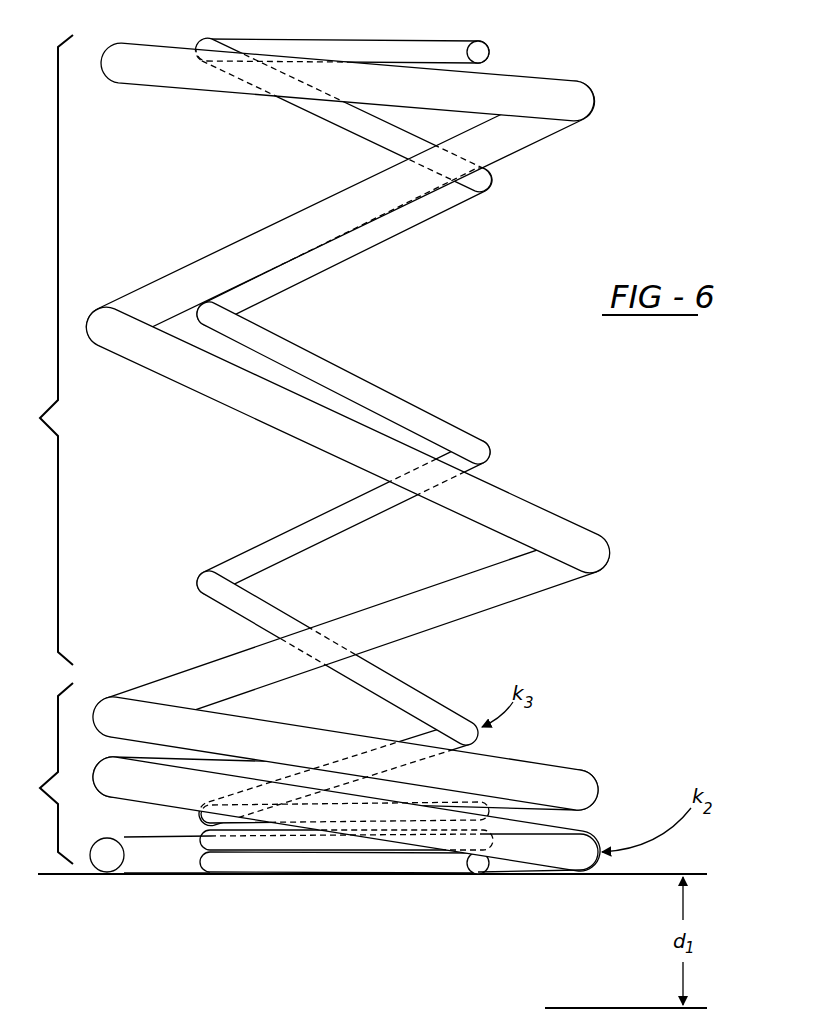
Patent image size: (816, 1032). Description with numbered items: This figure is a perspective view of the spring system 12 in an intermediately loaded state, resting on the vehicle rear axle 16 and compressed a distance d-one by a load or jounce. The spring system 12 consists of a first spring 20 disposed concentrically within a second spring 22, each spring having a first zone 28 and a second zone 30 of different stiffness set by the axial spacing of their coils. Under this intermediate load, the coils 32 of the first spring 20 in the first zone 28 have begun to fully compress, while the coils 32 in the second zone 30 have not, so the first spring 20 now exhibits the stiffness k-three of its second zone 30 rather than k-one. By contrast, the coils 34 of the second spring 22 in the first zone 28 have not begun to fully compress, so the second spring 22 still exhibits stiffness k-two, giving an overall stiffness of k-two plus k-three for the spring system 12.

The spring system 12 is at (390, 439).
The vehicle rear axle 16 is at (241, 934).
The first spring 20 is at (392, 456).
The second spring 22 is at (382, 458).
The first zone 28 is at (45, 773).
The second zone 30 is at (45, 350).
The coils 32 is at (497, 450).
The coils 34 is at (598, 777).